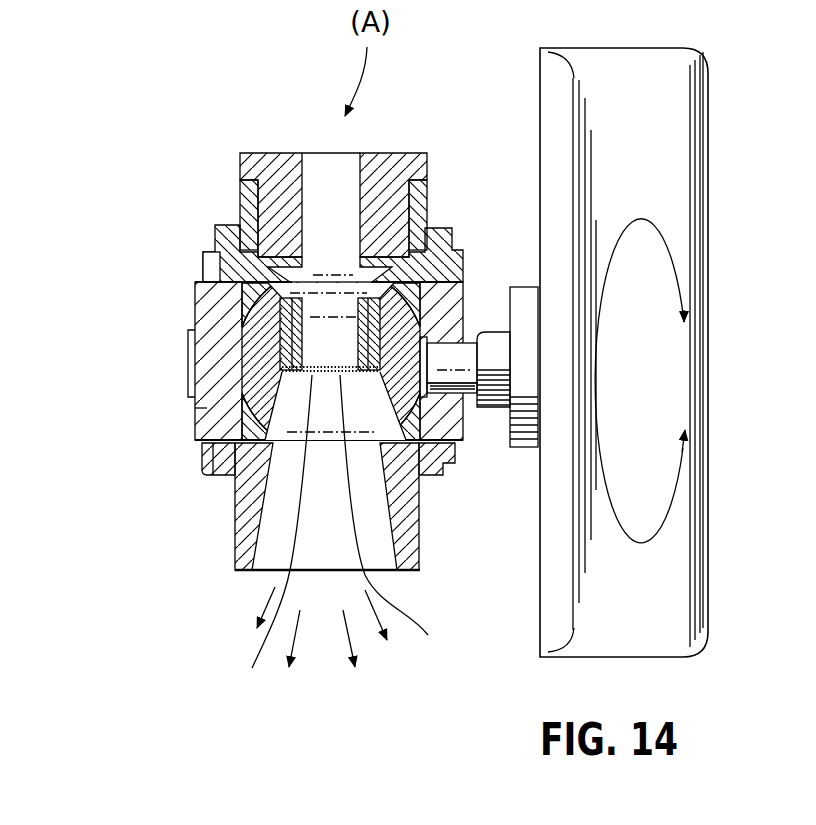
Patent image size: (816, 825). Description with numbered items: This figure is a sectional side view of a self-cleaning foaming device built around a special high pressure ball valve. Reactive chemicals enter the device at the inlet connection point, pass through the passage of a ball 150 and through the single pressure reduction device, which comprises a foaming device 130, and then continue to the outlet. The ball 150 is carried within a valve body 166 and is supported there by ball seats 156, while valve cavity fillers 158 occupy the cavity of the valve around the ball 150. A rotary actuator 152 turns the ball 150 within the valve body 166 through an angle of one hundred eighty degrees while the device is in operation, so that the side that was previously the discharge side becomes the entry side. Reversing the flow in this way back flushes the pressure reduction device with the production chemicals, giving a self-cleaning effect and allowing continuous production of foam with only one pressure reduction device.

The foaming device 130 is at (333, 538).
The ball 150 is at (203, 447).
The rotary actuator 152 is at (663, 543).
The ball seats 156 is at (455, 255).
The valve cavity fillers 158 is at (190, 350).
The valve body 166 is at (193, 412).